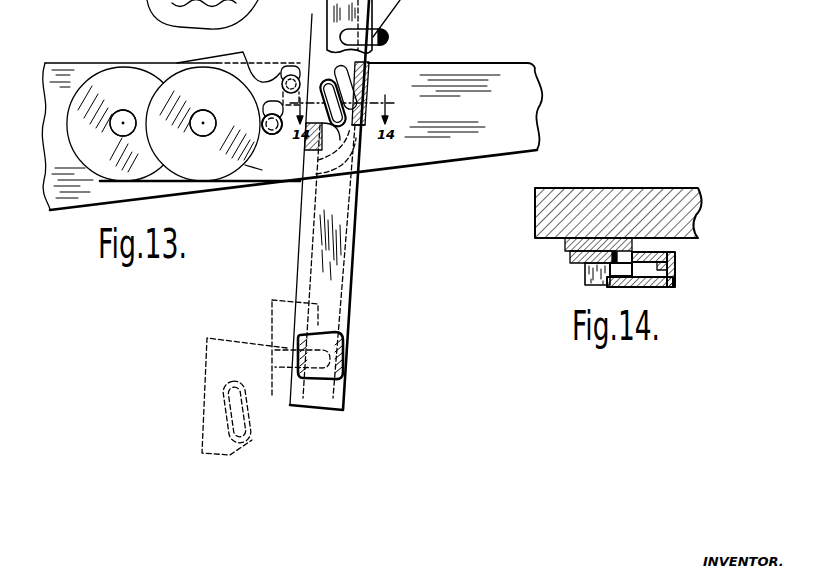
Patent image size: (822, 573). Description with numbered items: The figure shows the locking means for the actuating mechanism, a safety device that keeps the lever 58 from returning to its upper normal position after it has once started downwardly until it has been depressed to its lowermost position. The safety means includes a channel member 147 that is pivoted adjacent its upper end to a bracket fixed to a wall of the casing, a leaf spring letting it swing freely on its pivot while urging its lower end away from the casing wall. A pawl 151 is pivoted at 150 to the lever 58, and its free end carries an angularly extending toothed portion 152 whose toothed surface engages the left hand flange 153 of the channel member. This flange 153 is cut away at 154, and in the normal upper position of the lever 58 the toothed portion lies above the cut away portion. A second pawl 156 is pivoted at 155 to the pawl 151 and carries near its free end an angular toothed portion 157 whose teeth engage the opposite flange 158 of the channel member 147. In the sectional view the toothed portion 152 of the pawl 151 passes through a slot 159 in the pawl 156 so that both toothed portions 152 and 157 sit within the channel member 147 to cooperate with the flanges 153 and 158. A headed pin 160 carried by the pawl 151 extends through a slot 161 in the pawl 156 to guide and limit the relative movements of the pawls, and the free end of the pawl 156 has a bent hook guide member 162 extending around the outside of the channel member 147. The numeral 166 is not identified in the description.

In FIG. 13, the lever 58 is at (83, 195).
In FIG. 14, the lever 58 is at (620, 205).
In FIG. 13, the channel member 147 is at (333, 240).
In FIG. 14, the channel member 147 is at (647, 287).
In FIG. 13, the pivot 150 is at (118, 111).
In FIG. 13, the pawl 151 is at (273, 62).
In FIG. 14, the pawl 151 is at (573, 241).
In FIG. 13, the toothed portion 152 is at (345, 105).
In FIG. 13, the left hand flange 153 is at (308, 152).
In FIG. 13, the cut away portion 154 is at (312, 22).
In FIG. 14, the cut away portion 154 is at (607, 273).
In FIG. 13, the pivot 155 is at (201, 110).
In FIG. 13, the second pawl 156 is at (232, 357).
In FIG. 14, the second pawl 156 is at (670, 256).
In FIG. 13, the angular toothed portion 157 is at (348, 94).
In FIG. 14, the angular toothed portion 157 is at (677, 265).
In FIG. 13, the opposite flange 158 is at (366, 95).
In FIG. 13, the slot 159 is at (358, 108).
In FIG. 14, the slot 159 is at (650, 253).
In FIG. 13, the headed pin 160 is at (270, 137).
In FIG. 13, the slot 161 is at (274, 138).
In FIG. 13, the bent hook guide member 162 is at (352, 337).
In FIG. 14, the bent hook guide member 162 is at (677, 280).
In FIG. 13, the surface 166 is at (253, 168).